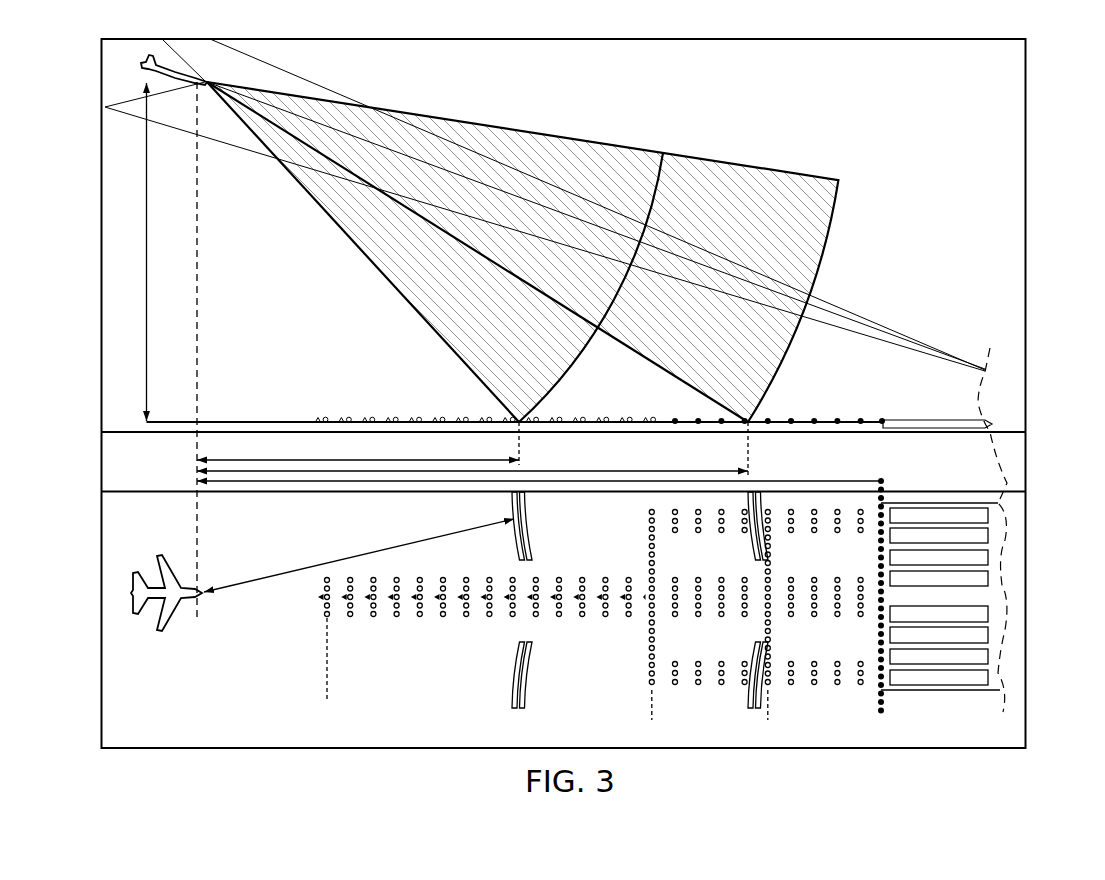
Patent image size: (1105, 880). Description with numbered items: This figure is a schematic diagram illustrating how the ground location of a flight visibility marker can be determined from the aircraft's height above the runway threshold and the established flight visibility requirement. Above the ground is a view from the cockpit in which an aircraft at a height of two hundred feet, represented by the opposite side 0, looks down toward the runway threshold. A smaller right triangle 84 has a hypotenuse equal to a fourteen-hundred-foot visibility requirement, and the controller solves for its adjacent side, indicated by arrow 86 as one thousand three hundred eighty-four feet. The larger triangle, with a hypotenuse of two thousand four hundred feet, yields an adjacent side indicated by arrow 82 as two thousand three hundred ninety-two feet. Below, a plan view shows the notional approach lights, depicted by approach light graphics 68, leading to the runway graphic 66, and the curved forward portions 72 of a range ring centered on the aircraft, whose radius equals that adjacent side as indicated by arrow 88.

The opposite side 0 is at (146, 280).
The triangle 84 is at (280, 298).
The arrow 86 is at (423, 460).
The arrow 82 is at (612, 471).
The forward portions of range ring 72 is at (760, 497).
The arrow 88 is at (257, 578).
The approach light graphics 68 is at (648, 642).
The runway graphic 66 is at (978, 597).